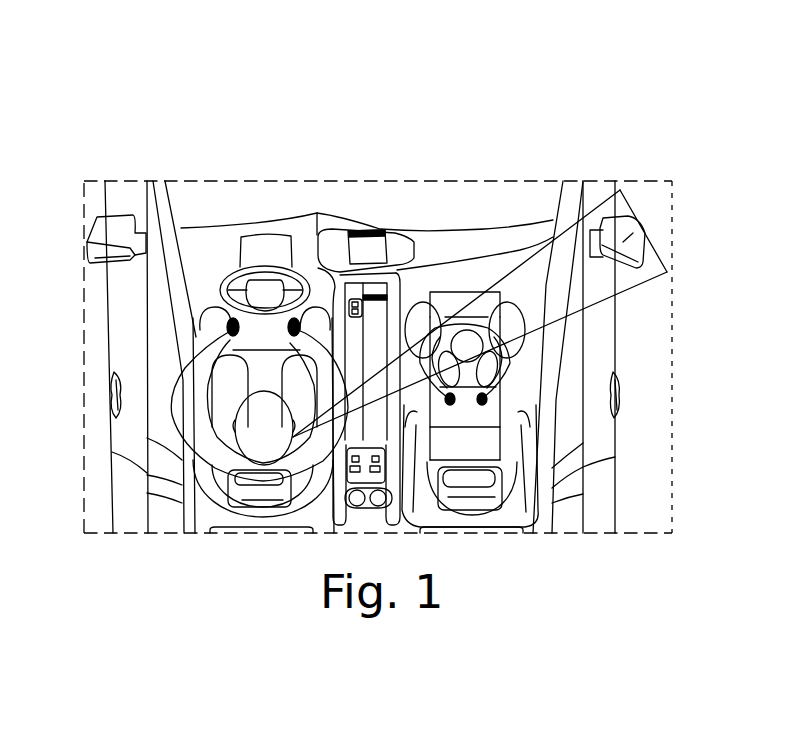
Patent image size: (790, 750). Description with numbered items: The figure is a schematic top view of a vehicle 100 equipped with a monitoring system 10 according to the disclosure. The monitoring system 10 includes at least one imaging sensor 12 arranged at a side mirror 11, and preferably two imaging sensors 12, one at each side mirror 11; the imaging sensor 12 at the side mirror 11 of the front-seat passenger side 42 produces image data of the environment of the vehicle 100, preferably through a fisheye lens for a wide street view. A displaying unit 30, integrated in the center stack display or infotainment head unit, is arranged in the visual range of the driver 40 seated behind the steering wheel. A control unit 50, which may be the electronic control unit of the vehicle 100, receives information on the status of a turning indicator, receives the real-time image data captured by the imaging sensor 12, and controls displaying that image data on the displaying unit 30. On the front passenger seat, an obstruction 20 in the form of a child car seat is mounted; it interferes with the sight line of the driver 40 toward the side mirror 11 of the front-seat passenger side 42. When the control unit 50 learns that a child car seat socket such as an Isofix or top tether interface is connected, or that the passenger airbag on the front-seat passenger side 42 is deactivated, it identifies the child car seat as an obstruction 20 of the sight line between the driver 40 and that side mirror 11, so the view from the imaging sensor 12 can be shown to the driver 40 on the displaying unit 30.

The monitoring system 10 is at (238, 148).
The side mirror 11 is at (117, 240).
The imaging sensor 12 is at (96, 218).
The obstruction 20 is at (457, 297).
The displaying unit 30 is at (373, 247).
The driver 40 is at (272, 442).
The front-seat passenger side 42 is at (523, 483).
The control unit 50 is at (182, 165).
The vehicle 100 is at (397, 150).